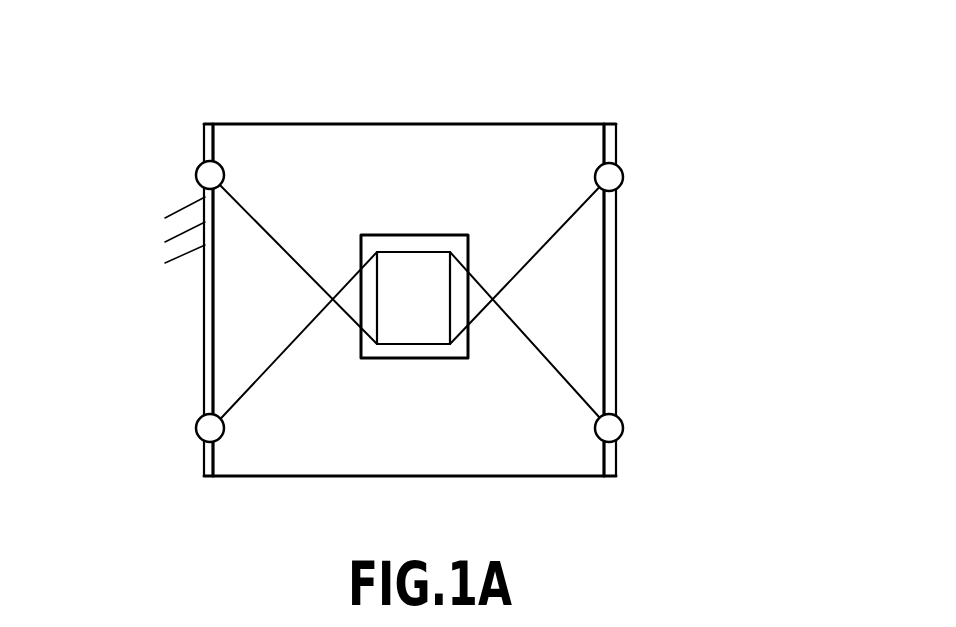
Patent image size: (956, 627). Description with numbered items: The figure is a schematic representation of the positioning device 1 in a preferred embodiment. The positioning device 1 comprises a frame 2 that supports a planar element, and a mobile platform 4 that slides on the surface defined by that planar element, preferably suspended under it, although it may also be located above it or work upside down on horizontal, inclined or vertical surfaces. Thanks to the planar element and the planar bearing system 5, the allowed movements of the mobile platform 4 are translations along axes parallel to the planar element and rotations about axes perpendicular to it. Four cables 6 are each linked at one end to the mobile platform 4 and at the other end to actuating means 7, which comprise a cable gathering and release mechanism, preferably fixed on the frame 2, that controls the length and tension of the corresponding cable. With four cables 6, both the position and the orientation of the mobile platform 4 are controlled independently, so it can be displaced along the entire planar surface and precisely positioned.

The positioning device 1 is at (425, 108).
The frame 2 is at (208, 125).
The mobile platform 4 is at (437, 234).
The planar bearing system 5 is at (393, 233).
The cables 6 is at (242, 203).
The actuating means 7 is at (196, 172).